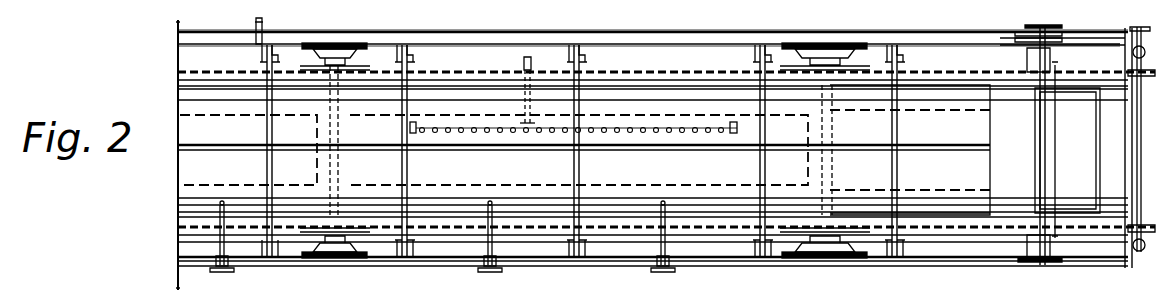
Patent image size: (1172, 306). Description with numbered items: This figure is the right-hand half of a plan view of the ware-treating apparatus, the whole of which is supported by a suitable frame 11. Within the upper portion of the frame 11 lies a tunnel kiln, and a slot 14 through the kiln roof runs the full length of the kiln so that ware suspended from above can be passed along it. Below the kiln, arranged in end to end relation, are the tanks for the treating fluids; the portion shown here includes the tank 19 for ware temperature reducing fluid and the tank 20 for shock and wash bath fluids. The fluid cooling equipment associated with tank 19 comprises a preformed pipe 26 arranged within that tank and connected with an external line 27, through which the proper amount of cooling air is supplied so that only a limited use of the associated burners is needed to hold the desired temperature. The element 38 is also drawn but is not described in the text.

The frame 11 is at (531, 21).
The slot 14 is at (178, 147).
The tank 19 is at (520, 175).
The tank 20 is at (968, 172).
The preformed pipe 26 is at (488, 140).
The external line 27 is at (520, 64).
The bracket 38 is at (264, 27).